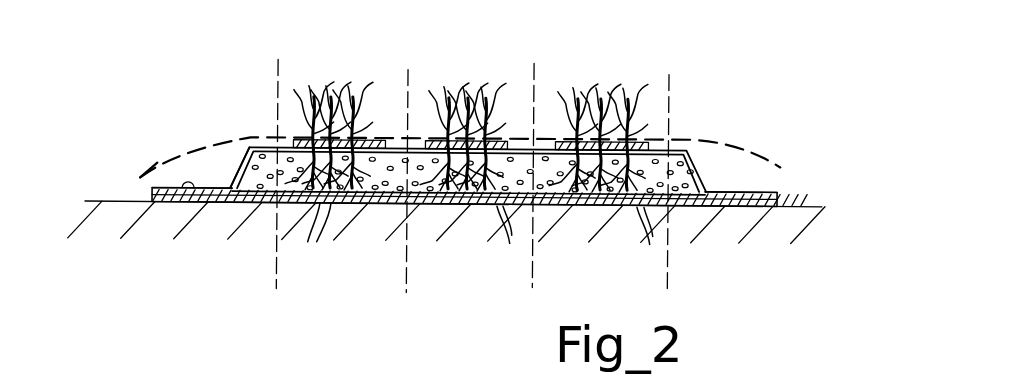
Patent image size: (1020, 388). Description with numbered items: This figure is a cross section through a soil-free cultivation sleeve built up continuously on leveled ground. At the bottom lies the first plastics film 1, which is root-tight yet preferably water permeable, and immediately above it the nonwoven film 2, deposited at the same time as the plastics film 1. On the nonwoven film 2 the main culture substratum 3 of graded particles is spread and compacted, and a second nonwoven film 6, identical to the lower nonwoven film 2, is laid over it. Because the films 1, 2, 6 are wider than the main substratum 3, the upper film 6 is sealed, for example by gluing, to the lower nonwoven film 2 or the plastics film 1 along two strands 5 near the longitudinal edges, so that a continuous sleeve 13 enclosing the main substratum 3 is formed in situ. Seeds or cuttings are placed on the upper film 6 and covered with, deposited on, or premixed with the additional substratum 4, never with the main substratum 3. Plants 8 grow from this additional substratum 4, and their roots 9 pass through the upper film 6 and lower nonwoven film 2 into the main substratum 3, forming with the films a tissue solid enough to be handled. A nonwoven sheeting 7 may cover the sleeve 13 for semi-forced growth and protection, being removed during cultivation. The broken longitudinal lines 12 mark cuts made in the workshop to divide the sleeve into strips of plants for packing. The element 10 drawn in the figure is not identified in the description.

The first plastics film 1 is at (380, 203).
The nonwoven film 2 is at (402, 203).
The main culture substratum 3 is at (700, 167).
The additional substratum 4 is at (636, 142).
The strands 5 is at (170, 199).
The second nonwoven film 6 is at (226, 172).
The nonwoven film sheeting 7 is at (740, 133).
The plants 8 is at (366, 67).
The roots 9 is at (468, 221).
The base mat 10 is at (220, 218).
The broken longitudinal lines 12 is at (670, 68).
The continuous sleeve 13 is at (222, 174).